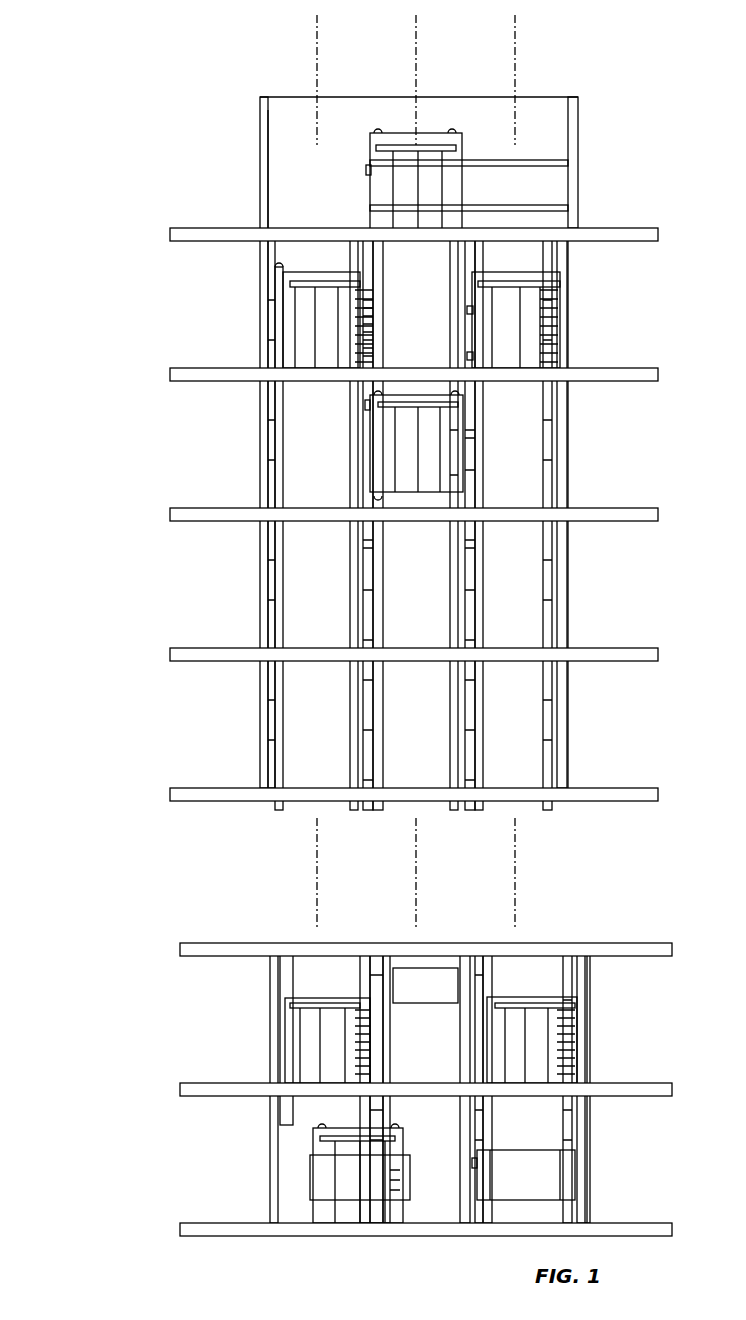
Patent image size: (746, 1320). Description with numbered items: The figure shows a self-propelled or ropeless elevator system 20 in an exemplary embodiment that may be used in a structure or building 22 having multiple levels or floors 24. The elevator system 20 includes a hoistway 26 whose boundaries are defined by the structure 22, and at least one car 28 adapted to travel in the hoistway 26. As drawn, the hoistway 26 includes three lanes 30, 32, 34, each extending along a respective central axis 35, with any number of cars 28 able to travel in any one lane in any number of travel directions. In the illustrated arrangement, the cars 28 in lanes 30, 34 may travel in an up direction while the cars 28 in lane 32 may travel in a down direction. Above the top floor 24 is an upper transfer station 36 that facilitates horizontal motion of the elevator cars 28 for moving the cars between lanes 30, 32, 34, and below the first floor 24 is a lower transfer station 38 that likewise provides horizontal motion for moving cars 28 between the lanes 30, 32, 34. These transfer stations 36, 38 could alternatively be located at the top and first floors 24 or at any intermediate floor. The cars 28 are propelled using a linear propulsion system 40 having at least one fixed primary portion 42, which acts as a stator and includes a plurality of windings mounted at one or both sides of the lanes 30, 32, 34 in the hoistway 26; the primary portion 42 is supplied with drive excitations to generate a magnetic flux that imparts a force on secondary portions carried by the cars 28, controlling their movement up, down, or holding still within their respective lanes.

The ropeless elevator system 20 is at (130, 50).
The structure or building 22 is at (262, 115).
The levels or floors 24 is at (183, 507).
The hoistway 26 is at (510, 548).
The car 28 is at (432, 150).
The first lane 30 is at (327, 641).
The second lane 32 is at (427, 641).
The third lane 34 is at (519, 641).
The central axis 35 is at (415, 68).
The upper transfer station 36 is at (305, 182).
The lower transfer station 38 is at (286, 1170).
The linear propulsion system 40 is at (403, 1237).
The primary portion 42 is at (448, 965).